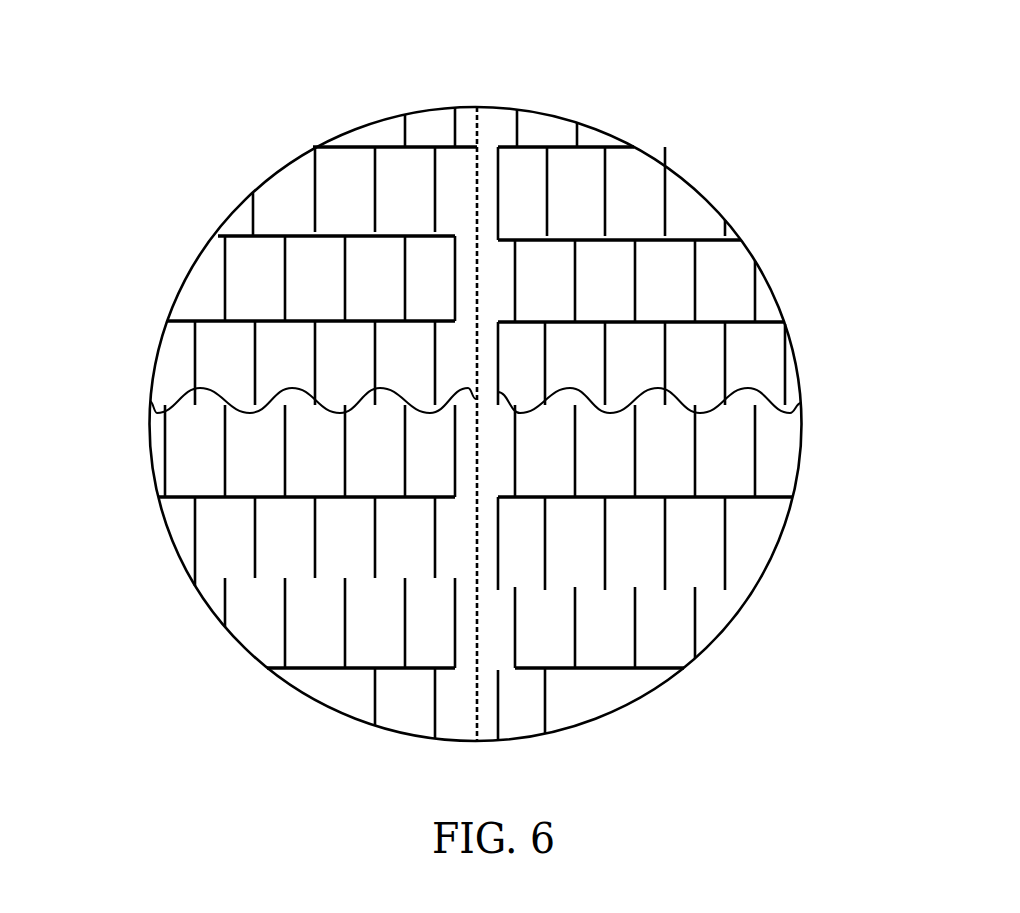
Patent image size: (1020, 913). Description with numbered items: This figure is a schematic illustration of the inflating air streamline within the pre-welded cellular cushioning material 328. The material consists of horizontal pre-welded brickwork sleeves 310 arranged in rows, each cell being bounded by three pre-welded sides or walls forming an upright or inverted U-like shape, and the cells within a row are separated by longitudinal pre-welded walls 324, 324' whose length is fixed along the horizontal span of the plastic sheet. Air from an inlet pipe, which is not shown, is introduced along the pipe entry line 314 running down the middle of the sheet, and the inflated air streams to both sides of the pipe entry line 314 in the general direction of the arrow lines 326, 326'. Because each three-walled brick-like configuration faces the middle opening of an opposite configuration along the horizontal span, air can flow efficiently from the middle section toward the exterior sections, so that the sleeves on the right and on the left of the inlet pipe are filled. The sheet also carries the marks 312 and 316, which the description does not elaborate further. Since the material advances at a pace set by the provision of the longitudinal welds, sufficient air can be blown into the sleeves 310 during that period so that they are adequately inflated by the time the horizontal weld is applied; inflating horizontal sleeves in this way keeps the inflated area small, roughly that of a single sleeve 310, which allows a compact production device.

The pre-welded brickwork sleeve 310 is at (153, 365).
The bus bar 312 is at (158, 322).
The pipe entry line 314 is at (457, 167).
The center line 316 is at (477, 107).
The longitudinal pre-welded wall 324 is at (109, 456).
The longitudinal pre-welded wall 324' is at (143, 500).
The arrow line 326 is at (258, 418).
The arrow line 326' is at (703, 460).
The pre-welded cellular cushioning material 328 is at (474, 377).